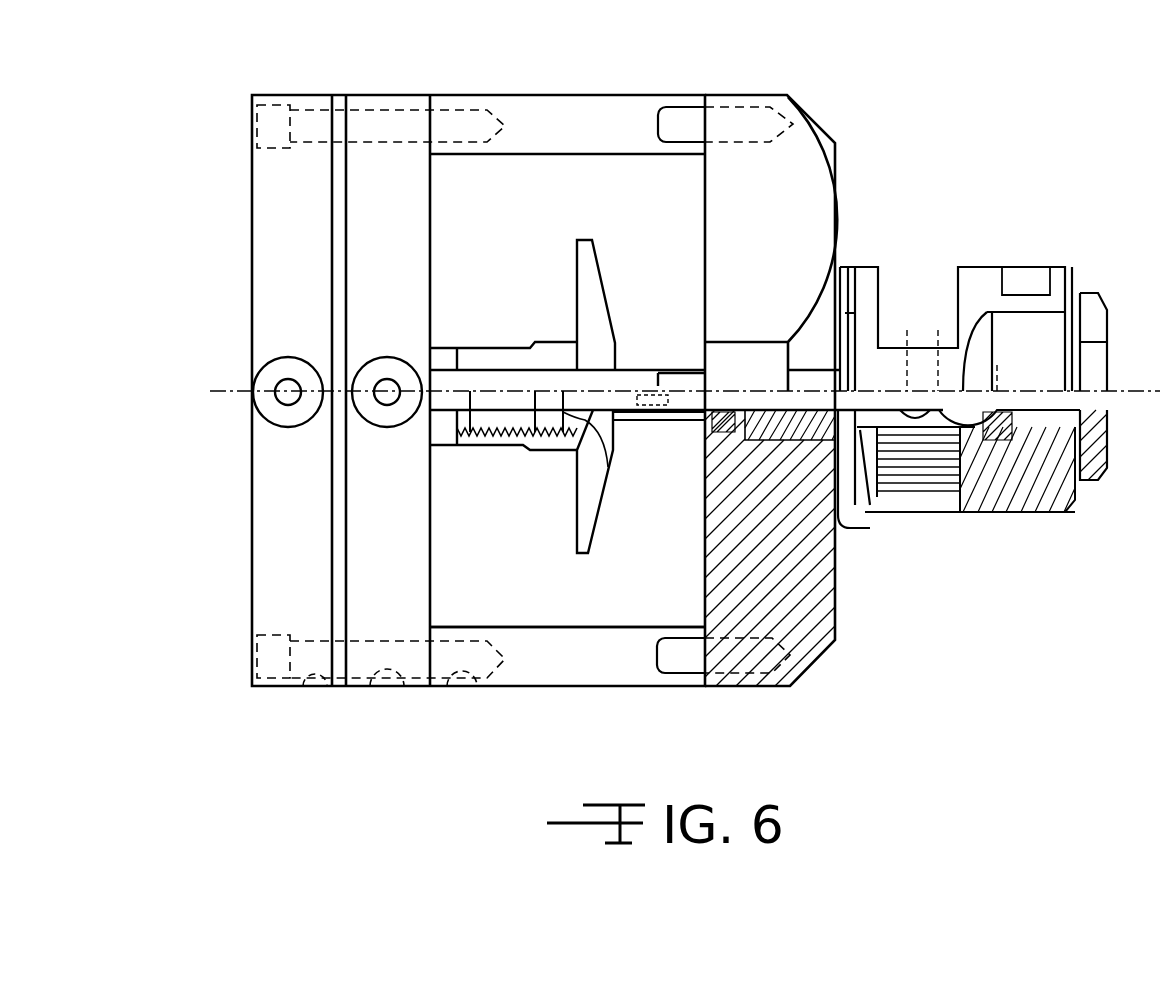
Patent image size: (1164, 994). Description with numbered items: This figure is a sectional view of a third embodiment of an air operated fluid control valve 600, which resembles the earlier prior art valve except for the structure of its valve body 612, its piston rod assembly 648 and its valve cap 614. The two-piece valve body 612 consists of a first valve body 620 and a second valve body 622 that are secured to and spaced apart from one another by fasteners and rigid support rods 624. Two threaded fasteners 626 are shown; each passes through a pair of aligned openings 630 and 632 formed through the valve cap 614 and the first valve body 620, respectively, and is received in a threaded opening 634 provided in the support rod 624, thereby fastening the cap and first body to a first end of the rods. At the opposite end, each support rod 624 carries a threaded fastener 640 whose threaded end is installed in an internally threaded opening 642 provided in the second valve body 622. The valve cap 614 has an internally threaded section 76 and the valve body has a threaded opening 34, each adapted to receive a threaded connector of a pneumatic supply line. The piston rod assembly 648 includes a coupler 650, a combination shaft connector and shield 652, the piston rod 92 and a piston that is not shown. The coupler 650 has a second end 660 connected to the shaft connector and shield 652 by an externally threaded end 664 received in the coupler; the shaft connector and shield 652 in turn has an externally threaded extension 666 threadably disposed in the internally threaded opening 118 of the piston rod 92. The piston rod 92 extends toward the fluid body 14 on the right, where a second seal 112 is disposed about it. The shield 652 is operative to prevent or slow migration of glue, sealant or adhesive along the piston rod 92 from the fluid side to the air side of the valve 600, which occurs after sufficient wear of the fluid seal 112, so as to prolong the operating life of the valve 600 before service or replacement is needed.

The air operated fluid control valve 600 is at (888, 62).
The two-piece valve body 612 is at (736, 90).
The valve cap 614 is at (240, 575).
The first valve body 620 is at (430, 220).
The second valve body 622 is at (718, 188).
The rigid support rod 624 is at (527, 675).
The threaded fastener 626 is at (262, 638).
The opening 630 is at (322, 688).
The opening 632 is at (402, 688).
The threaded opening 634 is at (478, 688).
The threaded fastener 640 is at (685, 676).
The internally threaded opening 642 is at (758, 680).
The internally threaded section 76 is at (285, 400).
The threaded opening 34 is at (388, 402).
The internally threaded opening 118 is at (638, 388).
The coupler 650 is at (485, 353).
The externally threaded end 664 is at (518, 410).
The combination shaft connector and shield 652 is at (600, 297).
The second end 660 is at (612, 475).
The externally threaded extension 666 is at (638, 420).
The piston rod assembly 648 is at (542, 500).
The second seal 112 is at (810, 425).
The piston rod 92 is at (878, 405).
The fluid body 14 is at (1070, 260).